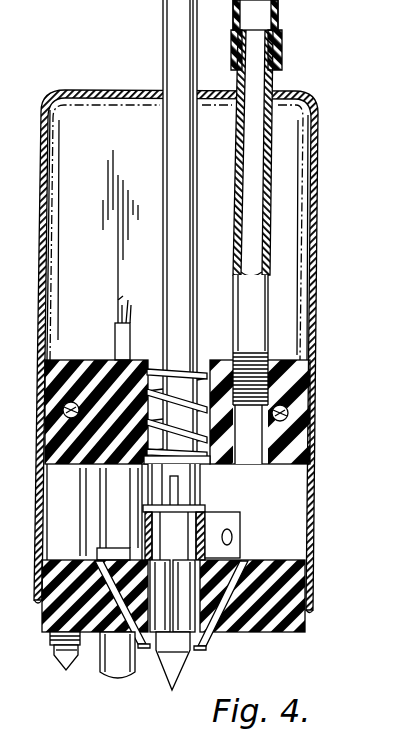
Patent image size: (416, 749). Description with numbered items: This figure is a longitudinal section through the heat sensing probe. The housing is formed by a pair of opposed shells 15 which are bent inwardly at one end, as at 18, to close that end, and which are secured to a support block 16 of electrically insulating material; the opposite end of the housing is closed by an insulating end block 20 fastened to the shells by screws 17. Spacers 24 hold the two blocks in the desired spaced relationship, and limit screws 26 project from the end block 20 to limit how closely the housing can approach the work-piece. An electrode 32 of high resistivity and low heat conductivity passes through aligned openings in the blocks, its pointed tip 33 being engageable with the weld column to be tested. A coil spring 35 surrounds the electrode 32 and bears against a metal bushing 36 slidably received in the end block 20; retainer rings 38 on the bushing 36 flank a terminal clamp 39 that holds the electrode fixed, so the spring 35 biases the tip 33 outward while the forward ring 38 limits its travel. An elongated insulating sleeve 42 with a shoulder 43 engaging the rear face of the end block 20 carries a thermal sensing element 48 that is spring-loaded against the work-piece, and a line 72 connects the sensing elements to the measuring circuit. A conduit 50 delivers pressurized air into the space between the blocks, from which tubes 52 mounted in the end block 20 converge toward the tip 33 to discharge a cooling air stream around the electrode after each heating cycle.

The shells 15 is at (40, 160).
The inwardly bent end of shells 18 is at (112, 90).
The conduit 50 is at (270, 206).
The electrode 32 is at (166, 238).
The line 72 is at (114, 330).
The coil spring 35 is at (176, 372).
The support block 16 is at (300, 390).
The screws 17 is at (45, 408).
The elongated sleeve 42 is at (118, 482).
The metal bushing 36 is at (192, 495).
The retainer rings 38 is at (206, 510).
The terminal clamp 39 is at (240, 526).
The spacers 24 is at (58, 527).
The shoulder 43 is at (75, 583).
The tubes 52 is at (112, 605).
The end block 20 is at (305, 622).
The limit screws 26 is at (68, 668).
The thermal sensing element 48 is at (118, 680).
The pointed tip 33 is at (172, 690).